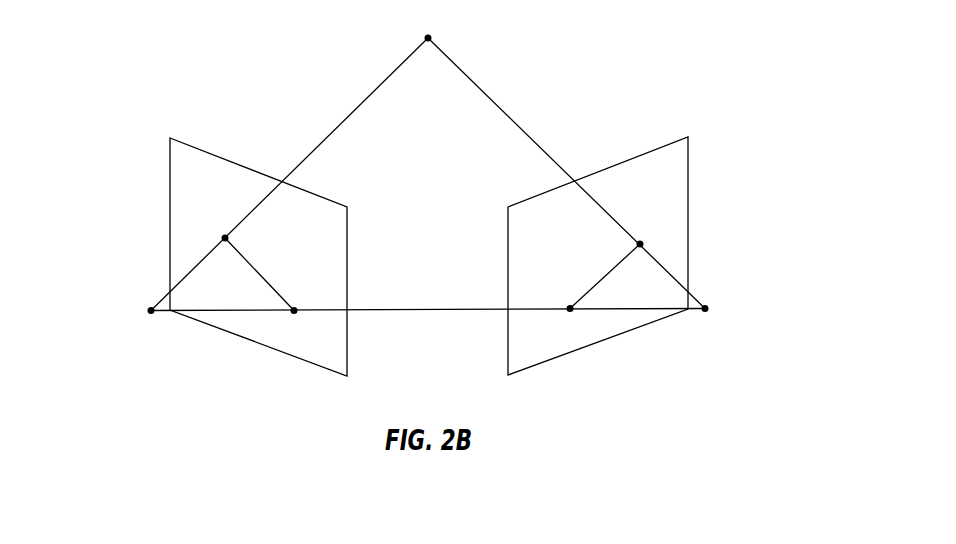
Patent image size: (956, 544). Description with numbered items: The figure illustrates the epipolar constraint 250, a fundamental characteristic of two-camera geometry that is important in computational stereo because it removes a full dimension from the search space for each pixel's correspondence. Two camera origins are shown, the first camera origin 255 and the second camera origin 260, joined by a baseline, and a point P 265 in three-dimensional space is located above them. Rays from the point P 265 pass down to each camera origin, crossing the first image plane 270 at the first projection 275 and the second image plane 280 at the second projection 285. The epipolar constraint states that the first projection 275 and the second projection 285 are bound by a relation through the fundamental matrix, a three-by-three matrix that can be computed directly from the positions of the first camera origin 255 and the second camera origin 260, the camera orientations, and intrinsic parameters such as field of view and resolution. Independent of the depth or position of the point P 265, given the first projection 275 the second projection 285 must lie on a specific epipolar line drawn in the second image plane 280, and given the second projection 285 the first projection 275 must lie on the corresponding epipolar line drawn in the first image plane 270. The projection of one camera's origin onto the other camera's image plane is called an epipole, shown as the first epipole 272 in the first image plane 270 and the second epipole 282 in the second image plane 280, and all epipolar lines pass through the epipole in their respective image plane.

The epipolar constraint 250 is at (163, 83).
The camera origin O_A 255 is at (150, 305).
The camera origin O_B 260 is at (712, 300).
The point P 265 is at (448, 37).
The image plane I_A 270 is at (182, 202).
The epipole E_A 272 is at (292, 317).
The projection u_A 275 is at (232, 237).
The image plane I_B 280 is at (675, 177).
The epipole E_B 282 is at (577, 318).
The projection u_B 285 is at (632, 243).